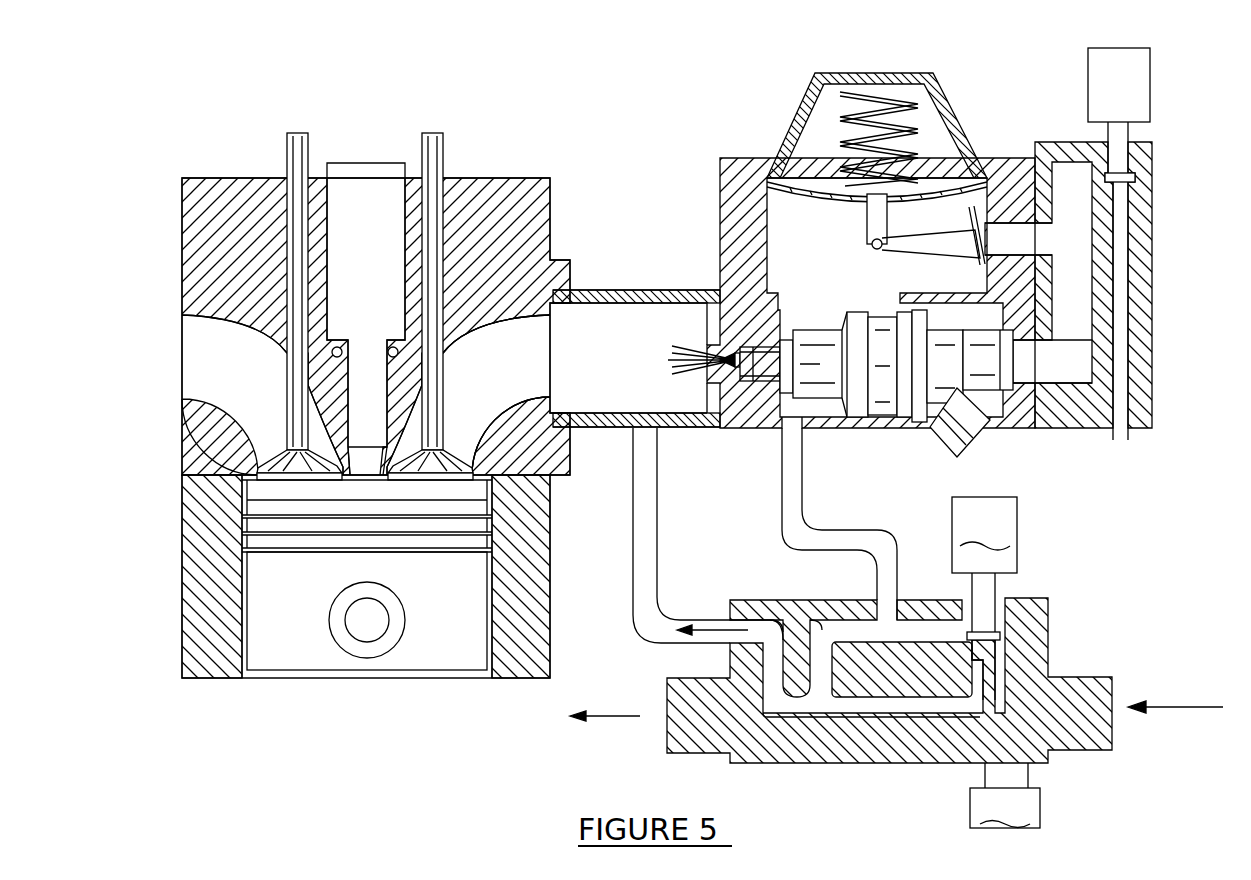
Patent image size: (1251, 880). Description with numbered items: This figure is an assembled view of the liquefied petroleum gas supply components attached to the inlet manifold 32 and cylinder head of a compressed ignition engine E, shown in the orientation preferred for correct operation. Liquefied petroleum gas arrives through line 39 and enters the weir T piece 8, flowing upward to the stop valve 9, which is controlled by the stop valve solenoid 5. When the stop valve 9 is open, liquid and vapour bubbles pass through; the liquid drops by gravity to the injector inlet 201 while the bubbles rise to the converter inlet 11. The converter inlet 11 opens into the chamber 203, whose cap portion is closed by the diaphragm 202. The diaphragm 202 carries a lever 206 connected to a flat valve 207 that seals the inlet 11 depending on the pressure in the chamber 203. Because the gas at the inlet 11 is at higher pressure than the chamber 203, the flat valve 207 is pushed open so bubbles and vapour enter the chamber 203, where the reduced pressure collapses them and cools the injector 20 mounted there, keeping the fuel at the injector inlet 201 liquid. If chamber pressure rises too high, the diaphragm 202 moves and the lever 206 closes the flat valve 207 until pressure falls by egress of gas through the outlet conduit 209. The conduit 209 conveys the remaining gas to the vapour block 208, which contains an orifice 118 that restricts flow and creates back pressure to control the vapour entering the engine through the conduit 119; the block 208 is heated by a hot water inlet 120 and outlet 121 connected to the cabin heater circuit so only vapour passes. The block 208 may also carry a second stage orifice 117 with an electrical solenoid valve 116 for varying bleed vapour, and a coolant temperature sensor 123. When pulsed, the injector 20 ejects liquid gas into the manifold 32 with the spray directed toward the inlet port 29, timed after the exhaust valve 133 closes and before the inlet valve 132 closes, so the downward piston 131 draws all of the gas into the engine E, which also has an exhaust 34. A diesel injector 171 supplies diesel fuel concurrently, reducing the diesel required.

The stop valve solenoid 5 is at (1137, 63).
The weir T piece 8 is at (1152, 268).
The stop valve 9 is at (1130, 180).
The converter inlet 11 is at (1043, 238).
The injector 20 is at (882, 385).
The inlet port 29 is at (513, 368).
The inlet manifold 32 is at (633, 327).
The exhaust 34 is at (205, 357).
The line 39 is at (1125, 453).
The electrical solenoid valve 116 is at (984, 598).
The second stage orifice 117 is at (1007, 693).
The orifice 118 is at (813, 665).
The conduit 119 is at (712, 636).
The hot water inlet 120 is at (1183, 708).
The hot water outlet 121 is at (612, 722).
The coolant temperature sensor 123 is at (1005, 795).
The piston 131 is at (430, 635).
The inlet valve 132 is at (440, 152).
The exhaust valve 133 is at (290, 152).
The diesel injector 171 is at (357, 185).
The injector inlet 201 is at (1045, 362).
The diaphragm 202 is at (940, 177).
The chamber 203 is at (807, 183).
The lever 206 is at (873, 217).
The flat valve 207 is at (975, 250).
The vapour block 208 is at (795, 605).
The outlet conduit 209 is at (893, 542).
The engine E is at (182, 570).